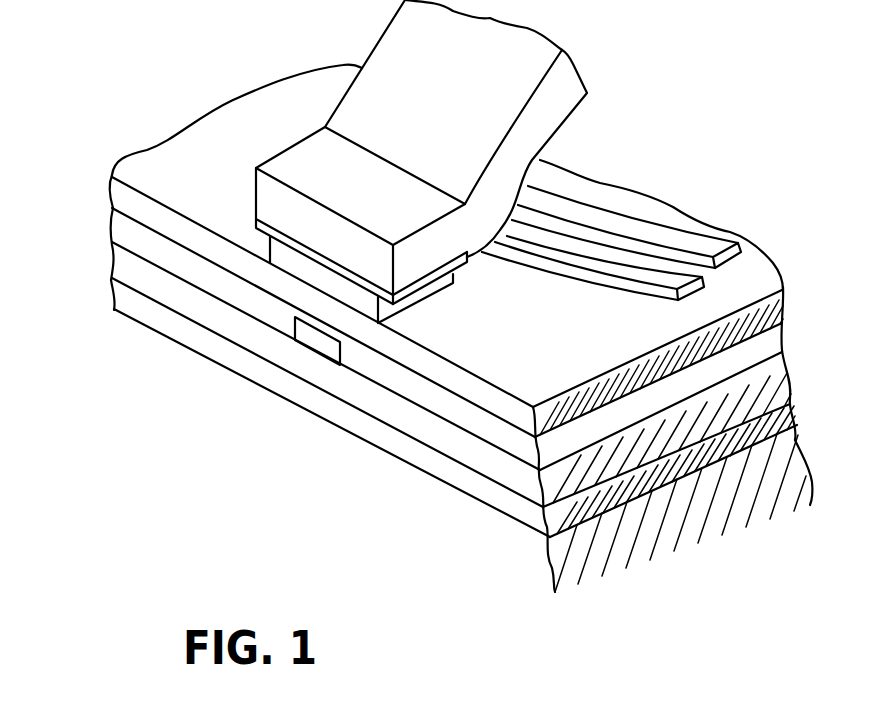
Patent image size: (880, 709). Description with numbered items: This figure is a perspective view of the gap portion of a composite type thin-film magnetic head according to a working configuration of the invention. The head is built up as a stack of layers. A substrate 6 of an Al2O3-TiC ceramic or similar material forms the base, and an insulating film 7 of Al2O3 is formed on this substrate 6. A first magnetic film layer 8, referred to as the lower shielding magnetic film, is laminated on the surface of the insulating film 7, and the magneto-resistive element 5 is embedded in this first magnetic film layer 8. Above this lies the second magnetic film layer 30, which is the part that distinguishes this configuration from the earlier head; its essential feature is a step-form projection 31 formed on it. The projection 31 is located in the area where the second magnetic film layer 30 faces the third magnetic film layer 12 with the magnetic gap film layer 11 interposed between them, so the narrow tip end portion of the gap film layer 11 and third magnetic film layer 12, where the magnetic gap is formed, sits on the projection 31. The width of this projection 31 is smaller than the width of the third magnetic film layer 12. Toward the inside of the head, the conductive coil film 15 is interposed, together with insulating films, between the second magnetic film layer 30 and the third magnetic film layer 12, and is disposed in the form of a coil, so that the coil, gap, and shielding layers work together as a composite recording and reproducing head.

The magneto-resistive element 5 is at (317, 338).
The substrate 6 is at (300, 464).
The insulating film 7 is at (440, 470).
The first magnetic film layer 8 is at (523, 488).
The magnetic gap film layer 11 is at (257, 220).
The third magnetic film layer 12 is at (310, 143).
The conductive coil film 15 is at (663, 237).
The second magnetic film layer 30 is at (128, 202).
The projection 31 is at (313, 272).